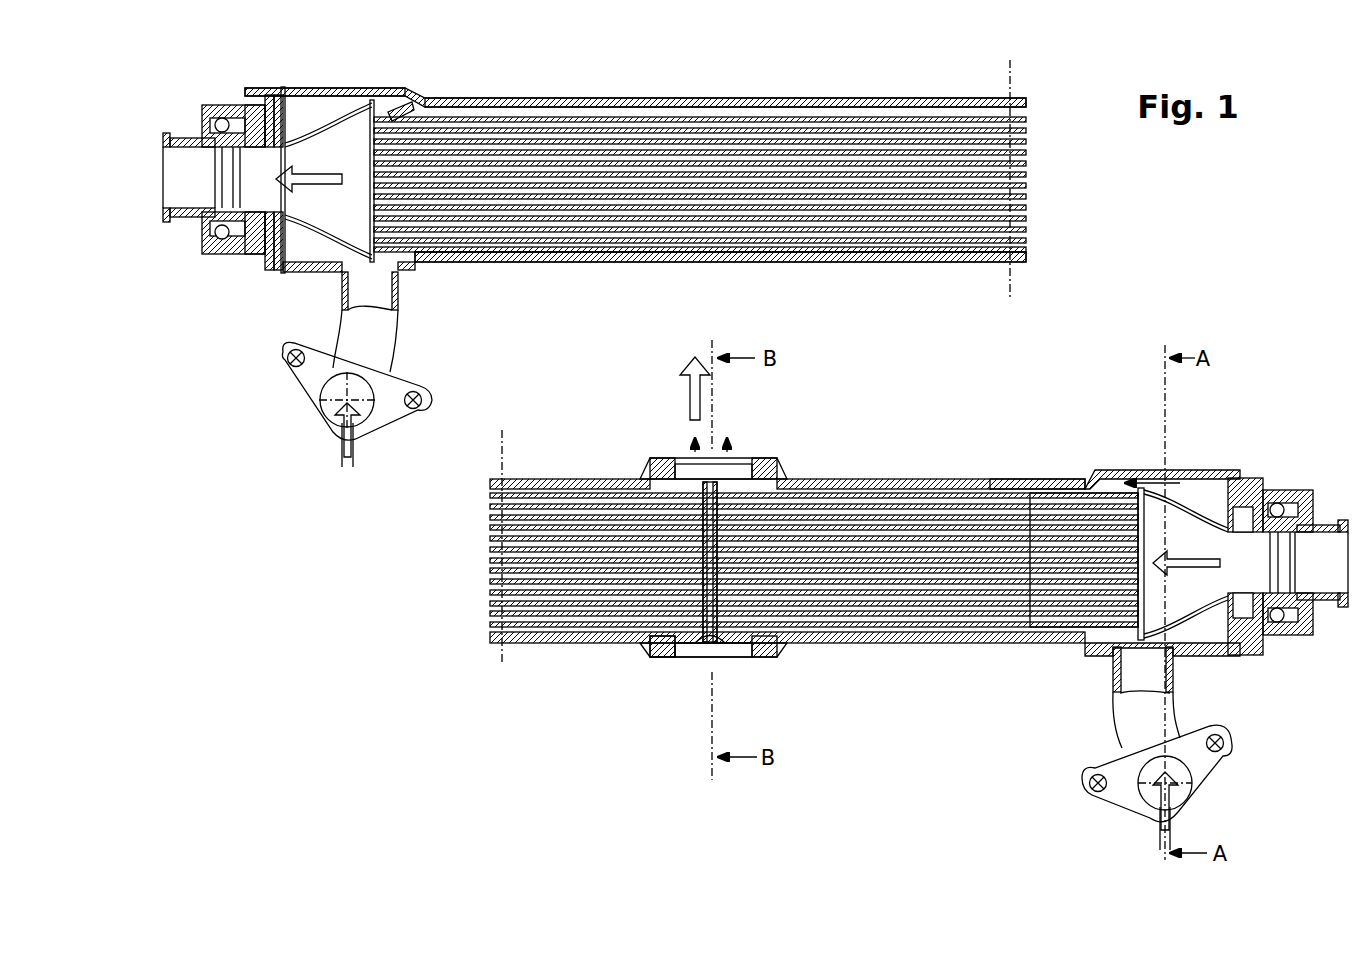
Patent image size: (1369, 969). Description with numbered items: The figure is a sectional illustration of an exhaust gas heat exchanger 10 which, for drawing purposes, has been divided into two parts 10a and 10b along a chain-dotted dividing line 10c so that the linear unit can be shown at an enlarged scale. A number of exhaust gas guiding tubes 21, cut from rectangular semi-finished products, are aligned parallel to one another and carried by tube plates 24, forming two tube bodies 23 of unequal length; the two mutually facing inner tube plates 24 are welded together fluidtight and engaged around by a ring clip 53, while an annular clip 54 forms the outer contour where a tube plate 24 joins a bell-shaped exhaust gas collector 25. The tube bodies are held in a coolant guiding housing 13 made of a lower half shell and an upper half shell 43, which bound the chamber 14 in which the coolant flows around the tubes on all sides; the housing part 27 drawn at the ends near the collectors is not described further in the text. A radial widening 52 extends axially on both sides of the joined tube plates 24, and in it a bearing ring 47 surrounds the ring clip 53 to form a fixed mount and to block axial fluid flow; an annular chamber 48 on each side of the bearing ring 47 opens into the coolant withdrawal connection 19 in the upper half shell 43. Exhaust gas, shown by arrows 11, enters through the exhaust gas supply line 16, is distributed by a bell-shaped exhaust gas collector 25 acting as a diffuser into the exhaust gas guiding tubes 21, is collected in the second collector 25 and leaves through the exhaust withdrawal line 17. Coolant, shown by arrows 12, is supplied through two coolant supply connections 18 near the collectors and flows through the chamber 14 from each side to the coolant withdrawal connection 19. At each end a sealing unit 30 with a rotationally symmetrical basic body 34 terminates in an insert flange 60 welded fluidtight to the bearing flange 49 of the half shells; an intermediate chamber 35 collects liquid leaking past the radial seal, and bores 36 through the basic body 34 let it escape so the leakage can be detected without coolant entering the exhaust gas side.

The exhaust gas heat exchanger 10 is at (690, 278).
The first part of the exhaust gas heat exchanger 10a is at (605, 96).
The second part of the exhaust gas heat exchanger 10b is at (565, 471).
The dividing line 10c is at (1008, 291).
The exhaust gas flow arrows 11 is at (314, 171).
The coolant flow arrows 12 is at (357, 451).
The coolant guiding housing 13 is at (1045, 493).
The chamber 14 is at (330, 97).
The exhaust gas supply line 16 is at (1310, 578).
The exhaust withdrawal line 17 is at (176, 192).
The coolant supply connection 18 is at (365, 351).
The coolant withdrawal connection 19 is at (733, 468).
The exhaust gas guiding tubes 21 is at (440, 120).
The tube bodies 23 is at (530, 100).
The tube plates 24 is at (372, 200).
The bell-shaped exhaust gas collector 25 is at (1232, 476).
The housing part / diffuser 27 is at (330, 90).
The sealing unit 30 is at (220, 97).
The basic body 34 is at (205, 243).
The intermediate chamber 35 is at (234, 96).
The bores 36 is at (232, 258).
The upper half shell 43 is at (1022, 478).
The bearing ring 47 is at (712, 658).
The annular chamber 48 is at (760, 470).
The bearing flange 49 is at (278, 94).
The radial widening 52 is at (655, 650).
The ring clip 53 is at (680, 652).
The annular clip 54 is at (396, 110).
The insert flange 60 is at (262, 94).